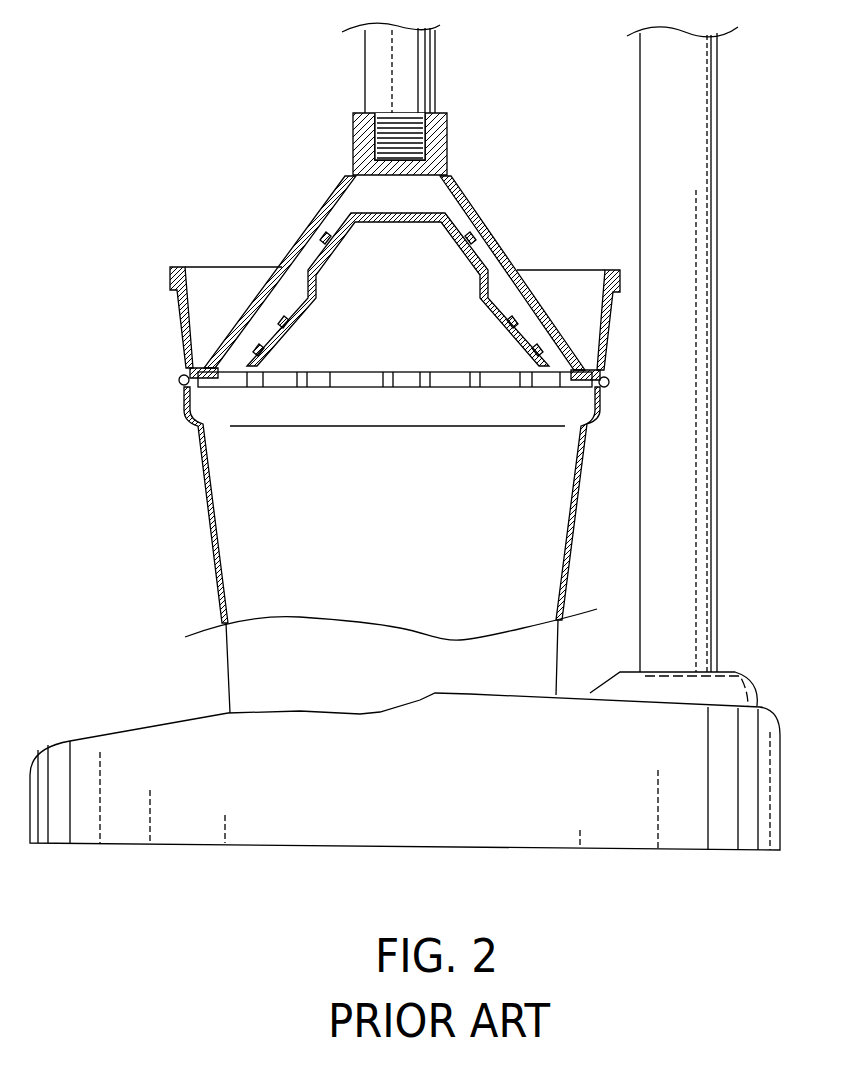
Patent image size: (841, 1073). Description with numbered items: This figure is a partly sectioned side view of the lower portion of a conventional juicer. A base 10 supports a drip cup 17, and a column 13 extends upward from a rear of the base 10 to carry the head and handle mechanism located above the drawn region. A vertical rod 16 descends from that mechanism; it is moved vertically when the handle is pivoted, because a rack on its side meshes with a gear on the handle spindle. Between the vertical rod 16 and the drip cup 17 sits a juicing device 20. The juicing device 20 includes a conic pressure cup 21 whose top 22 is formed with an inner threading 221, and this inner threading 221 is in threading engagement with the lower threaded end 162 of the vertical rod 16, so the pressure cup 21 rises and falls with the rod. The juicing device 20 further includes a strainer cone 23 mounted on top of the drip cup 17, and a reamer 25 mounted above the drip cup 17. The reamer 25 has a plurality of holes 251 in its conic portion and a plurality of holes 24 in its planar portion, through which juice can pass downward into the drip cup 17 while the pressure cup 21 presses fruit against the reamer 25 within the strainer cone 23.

The base 10 is at (528, 832).
The column 13 is at (710, 341).
The vertical rod 16 is at (425, 62).
The lower threaded end 162 is at (433, 150).
The drip cup 17 is at (212, 505).
The juicing device 20 is at (206, 226).
The conic pressure cup 21 is at (317, 217).
The top 22 is at (365, 150).
The inner threading 221 is at (358, 123).
The strainer cone 23 is at (178, 323).
The holes 24 is at (348, 378).
The reamer 25 is at (335, 256).
The holes 251 is at (300, 300).